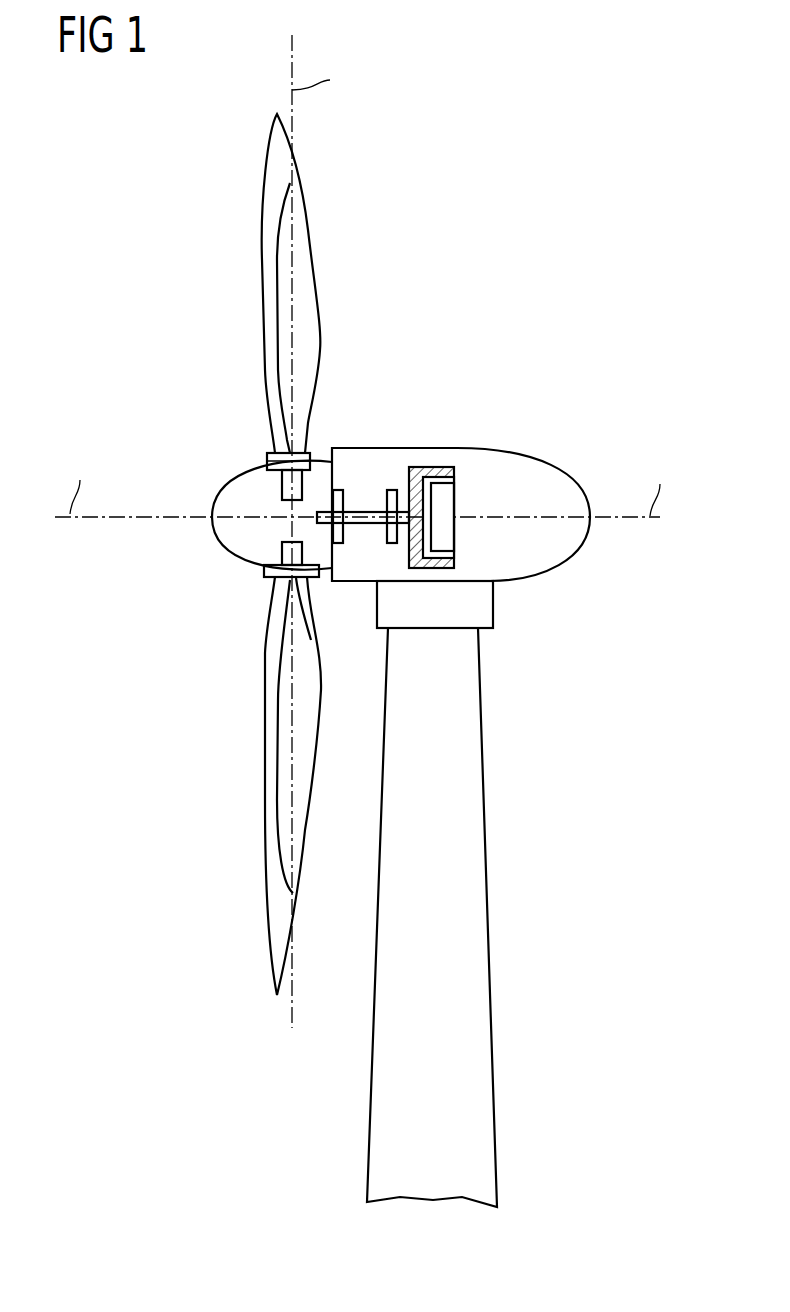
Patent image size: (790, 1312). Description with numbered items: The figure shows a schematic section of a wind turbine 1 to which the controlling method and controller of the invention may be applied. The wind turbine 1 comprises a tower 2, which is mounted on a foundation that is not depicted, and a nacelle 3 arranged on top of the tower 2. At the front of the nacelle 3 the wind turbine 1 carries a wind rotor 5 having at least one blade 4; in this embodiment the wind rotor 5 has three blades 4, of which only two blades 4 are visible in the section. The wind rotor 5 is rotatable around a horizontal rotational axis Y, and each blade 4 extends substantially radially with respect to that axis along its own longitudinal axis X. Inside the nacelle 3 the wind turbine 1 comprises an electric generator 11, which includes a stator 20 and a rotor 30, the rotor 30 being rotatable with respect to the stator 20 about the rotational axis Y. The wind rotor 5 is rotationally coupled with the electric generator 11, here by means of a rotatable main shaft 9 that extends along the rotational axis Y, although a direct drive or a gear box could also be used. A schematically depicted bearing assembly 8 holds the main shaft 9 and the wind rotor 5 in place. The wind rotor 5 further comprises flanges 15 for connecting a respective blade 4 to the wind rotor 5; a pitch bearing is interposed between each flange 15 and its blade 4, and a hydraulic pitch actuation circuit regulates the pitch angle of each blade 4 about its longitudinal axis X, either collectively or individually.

The wind turbine 1 is at (375, 621).
The tower 2 is at (478, 873).
The nacelle 3 is at (566, 447).
The blade 4 is at (263, 278).
The wind rotor 5 is at (200, 556).
The bearing assembly 8 is at (392, 490).
The main shaft 9 is at (350, 527).
The electric generator 11 is at (467, 470).
The flange 15 is at (313, 450).
The stator 20 is at (445, 495).
The rotor 30 is at (418, 470).